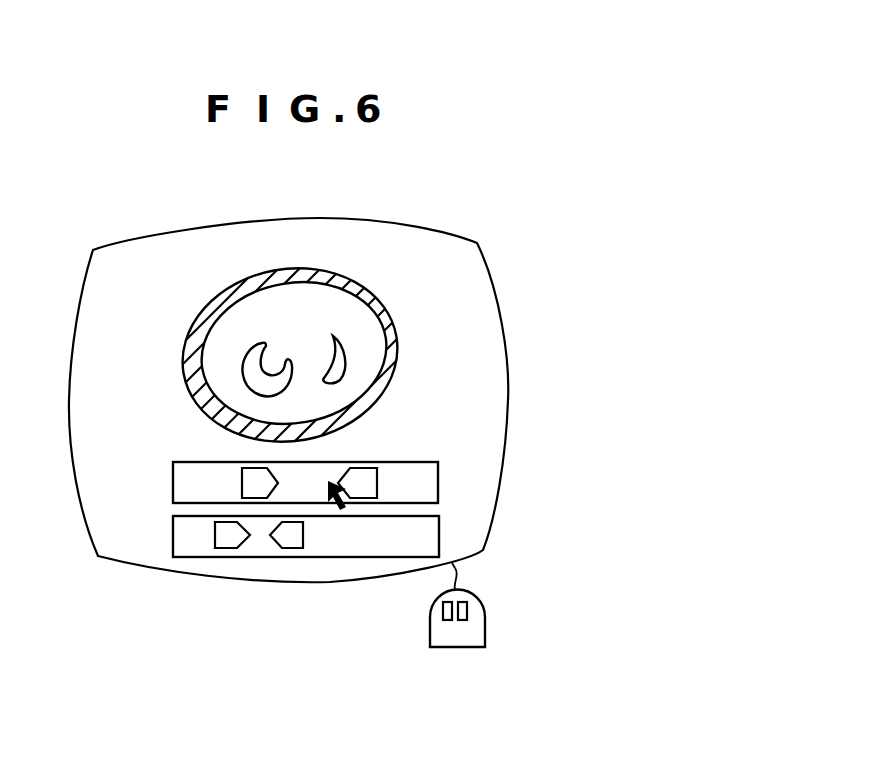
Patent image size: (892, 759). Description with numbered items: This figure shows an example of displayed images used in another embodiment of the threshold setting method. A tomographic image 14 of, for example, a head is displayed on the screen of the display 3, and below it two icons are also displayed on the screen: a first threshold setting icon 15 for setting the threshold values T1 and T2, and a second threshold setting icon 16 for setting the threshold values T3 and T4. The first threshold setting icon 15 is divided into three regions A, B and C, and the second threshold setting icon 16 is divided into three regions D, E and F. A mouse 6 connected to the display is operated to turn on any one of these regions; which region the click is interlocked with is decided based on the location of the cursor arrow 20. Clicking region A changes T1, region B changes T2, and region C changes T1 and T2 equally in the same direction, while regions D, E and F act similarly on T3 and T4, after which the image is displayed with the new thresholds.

The display 3 is at (361, 222).
The tomographic image 14 is at (397, 327).
The first threshold setting icon 15 is at (438, 483).
The second threshold setting icon 16 is at (439, 536).
The cursor arrow 20 is at (337, 478).
The mouse 6 is at (485, 614).